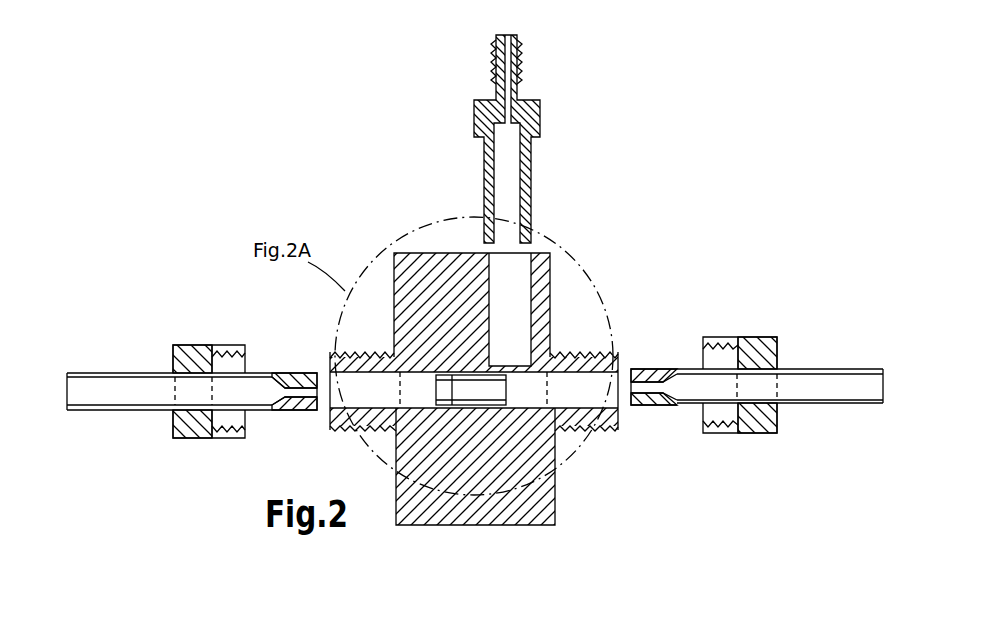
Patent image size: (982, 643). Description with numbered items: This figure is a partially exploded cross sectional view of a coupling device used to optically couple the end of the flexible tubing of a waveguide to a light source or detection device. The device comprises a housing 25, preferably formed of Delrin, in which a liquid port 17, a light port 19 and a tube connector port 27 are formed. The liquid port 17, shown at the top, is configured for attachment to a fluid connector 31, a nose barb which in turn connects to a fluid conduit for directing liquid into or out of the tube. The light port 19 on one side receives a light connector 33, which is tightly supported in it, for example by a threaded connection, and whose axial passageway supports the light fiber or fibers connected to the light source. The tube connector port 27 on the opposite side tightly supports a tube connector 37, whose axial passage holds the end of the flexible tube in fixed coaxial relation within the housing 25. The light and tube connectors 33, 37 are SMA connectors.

The liquid port 17 is at (534, 244).
The light port 19 is at (327, 415).
The housing 25 is at (556, 256).
The tube connector port 27 is at (612, 381).
The fluid connector 31 is at (474, 105).
The light connector 33 is at (179, 442).
The tube connector 37 is at (781, 344).